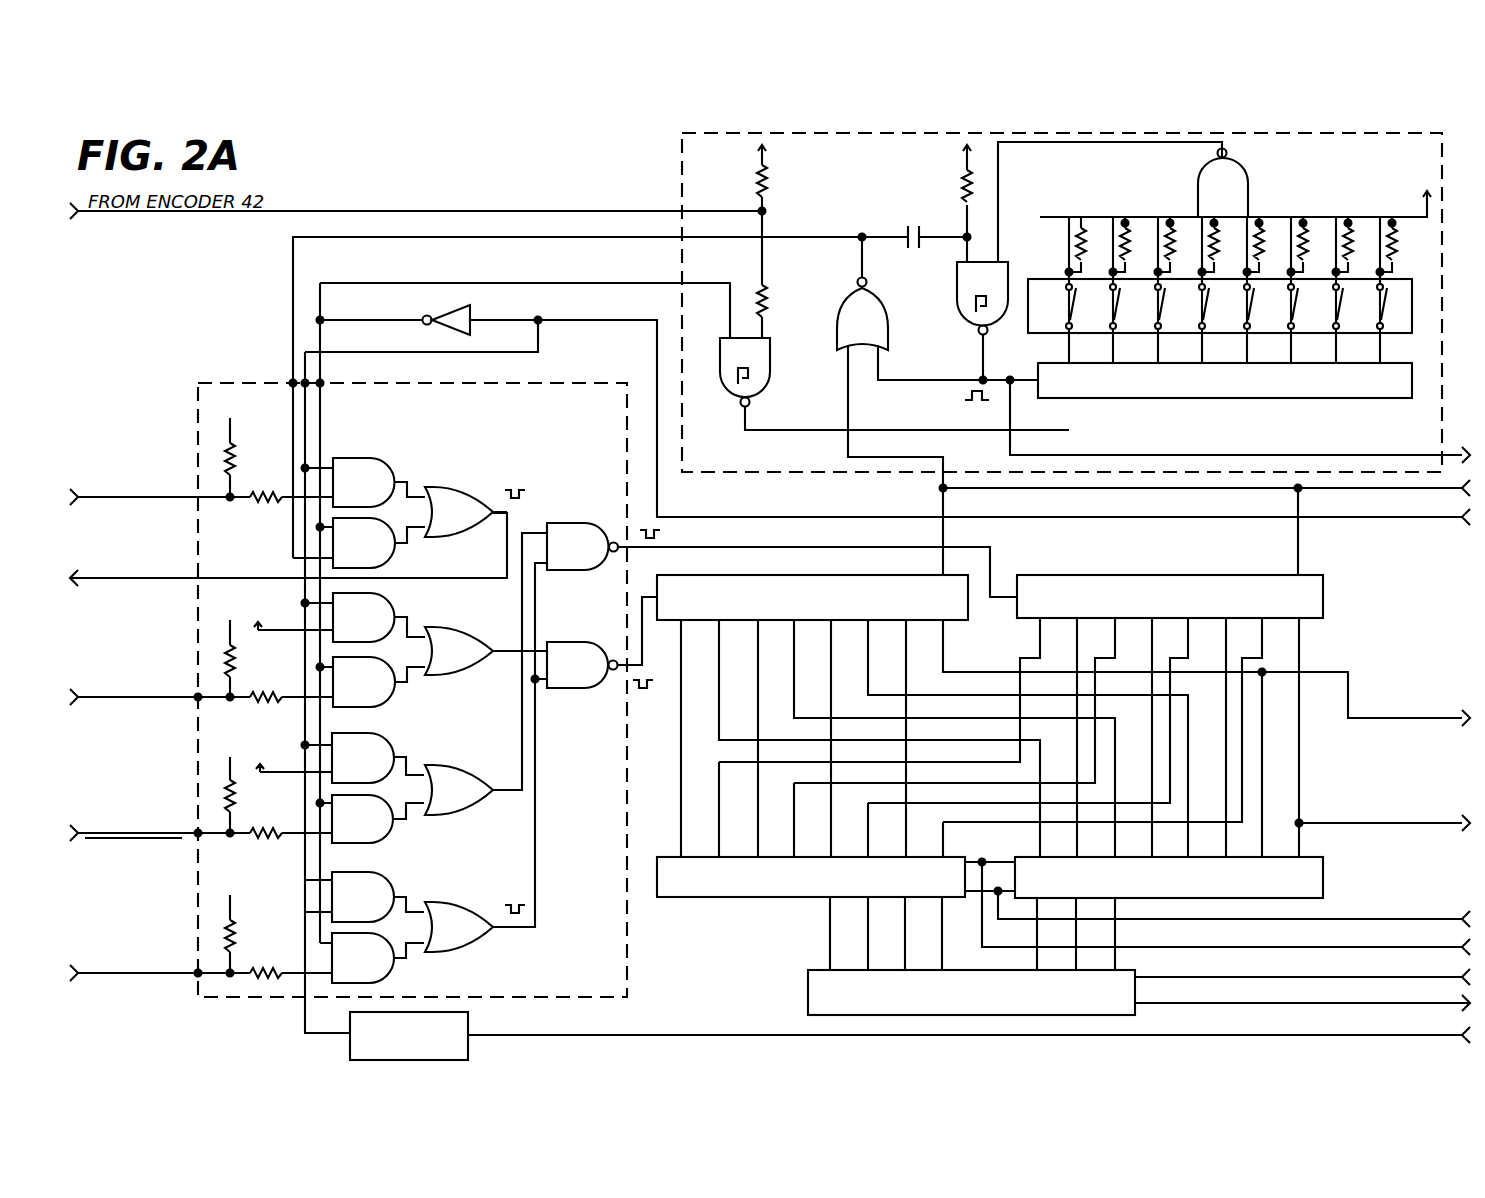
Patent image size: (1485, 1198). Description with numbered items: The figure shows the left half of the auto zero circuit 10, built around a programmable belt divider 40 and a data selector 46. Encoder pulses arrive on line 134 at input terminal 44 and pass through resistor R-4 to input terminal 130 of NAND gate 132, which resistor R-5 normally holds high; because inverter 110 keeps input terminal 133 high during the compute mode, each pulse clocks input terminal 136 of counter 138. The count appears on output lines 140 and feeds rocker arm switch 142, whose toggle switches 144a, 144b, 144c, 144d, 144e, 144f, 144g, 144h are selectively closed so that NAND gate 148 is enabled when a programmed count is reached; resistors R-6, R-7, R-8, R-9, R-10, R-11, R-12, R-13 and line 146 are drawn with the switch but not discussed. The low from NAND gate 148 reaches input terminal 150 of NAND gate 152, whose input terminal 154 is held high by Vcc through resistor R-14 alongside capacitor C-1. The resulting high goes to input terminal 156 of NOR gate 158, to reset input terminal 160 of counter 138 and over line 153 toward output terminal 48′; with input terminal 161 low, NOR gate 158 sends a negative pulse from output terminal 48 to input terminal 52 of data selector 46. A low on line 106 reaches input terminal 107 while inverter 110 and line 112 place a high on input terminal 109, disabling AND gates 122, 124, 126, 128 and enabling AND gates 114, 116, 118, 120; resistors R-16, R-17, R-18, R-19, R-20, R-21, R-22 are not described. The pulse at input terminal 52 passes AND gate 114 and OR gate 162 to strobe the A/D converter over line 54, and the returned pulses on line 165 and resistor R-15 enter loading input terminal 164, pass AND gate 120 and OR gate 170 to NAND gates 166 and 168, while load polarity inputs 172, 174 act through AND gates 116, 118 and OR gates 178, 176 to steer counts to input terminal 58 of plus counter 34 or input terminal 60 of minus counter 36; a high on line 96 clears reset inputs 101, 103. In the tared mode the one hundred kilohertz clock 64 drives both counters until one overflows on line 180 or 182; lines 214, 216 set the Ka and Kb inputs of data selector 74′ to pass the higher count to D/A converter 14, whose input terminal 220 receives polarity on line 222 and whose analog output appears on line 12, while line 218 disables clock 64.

The auto zero circuit 10 is at (584, 170).
The line 12 is at (1380, 1005).
The D/A converter 14 is at (810, 970).
The plus counter 34 is at (770, 575).
The minus counter 36 is at (1140, 575).
The programmable belt divider 40 is at (682, 164).
The input terminal 44 is at (418, 203).
The data selector 46 is at (627, 948).
The output terminal 48 is at (632, 386).
The output terminal 48′ is at (1458, 448).
The input terminal 52 is at (292, 382).
The line 54 is at (270, 578).
The input terminal 58 is at (656, 603).
The input terminal 60 is at (1013, 592).
The 100 Khz clock 64 is at (468, 1027).
The data selector 74′ is at (745, 897).
The line 96 is at (1368, 489).
The reset input 101 is at (967, 563).
The reset input 103 is at (1298, 574).
The line 106 is at (1448, 516).
The input terminal 107 is at (293, 382).
The input terminal 109 is at (307, 382).
The inverter 110 is at (470, 312).
The line 112 is at (324, 346).
The AND gate 114 is at (378, 559).
The AND gate 116 is at (378, 700).
The AND gate 118 is at (378, 840).
The AND gate 120 is at (383, 974).
The AND gate 122 is at (378, 456).
The AND gate 124 is at (380, 594).
The AND gate 126 is at (378, 734).
The AND gate 128 is at (380, 874).
The input terminal 130 is at (782, 326).
The NAND gate 132 is at (720, 405).
The input terminal 133 is at (525, 310).
The line 134 is at (580, 211).
The input terminal 136 is at (1092, 415).
The counter 138 is at (1262, 405).
The output lines 140 is at (1422, 352).
The rocker arm switch 142 is at (1037, 342).
The toggle switch 144a is at (1058, 290).
The toggle switch 144b is at (1102, 290).
The toggle switch 144c is at (1147, 290).
The toggle switch 144d is at (1191, 290).
The toggle switch 144e is at (1236, 290).
The toggle switch 144f is at (1281, 290).
The toggle switch 144g is at (1325, 290).
The toggle switch 144h is at (1369, 290).
The bus line 146 is at (1034, 226).
The NAND gate 148 is at (1248, 190).
The input terminal 150 is at (1089, 263).
The NAND gate 152 is at (965, 312).
The line 153 is at (1180, 454).
The input terminal 154 is at (950, 255).
The input terminal 156 is at (958, 372).
The NOR gate 158 is at (878, 306).
The reset input terminal 160 is at (1030, 378).
The input terminal 161 is at (883, 460).
The OR gate 162 is at (450, 488).
The loading input terminal 164 is at (190, 972).
The line 165 is at (214, 978).
The NAND gate 166 is at (575, 690).
The NAND gate 168 is at (568, 572).
The OR gate 170 is at (450, 904).
The load polarity input 172 is at (185, 692).
The load polarity input 174 is at (187, 827).
The OR gate 176 is at (468, 816).
The OR gate 178 is at (470, 678).
The line 180 is at (1436, 716).
The line 182 is at (1432, 821).
The line 214 is at (1385, 948).
The line 216 is at (1385, 918).
The line 218 is at (1372, 1040).
The input terminal 220 is at (1172, 963).
The line 222 is at (1382, 978).
The resistor R-4 is at (779, 274).
The resistor R-5 is at (779, 178).
The resistor R-6 is at (1096, 271).
The resistor R-7 is at (1141, 271).
The resistor R-8 is at (1185, 271).
The resistor R-9 is at (1229, 271).
The resistor R-10 is at (1279, 271).
The resistor R-11 is at (1323, 271).
The resistor R-12 is at (1368, 271).
The resistor R-13 is at (1412, 271).
The resistor R-14 is at (942, 191).
The resistor R-15 is at (265, 990).
The resistor R-16 is at (238, 934).
The resistor R-17 is at (264, 850).
The resistor R-18 is at (237, 788).
The resistor R-19 is at (265, 714).
The resistor R-20 is at (238, 651).
The resistor R-21 is at (201, 494).
The resistor R-22 is at (252, 450).
The capacitor C-1 is at (935, 220).